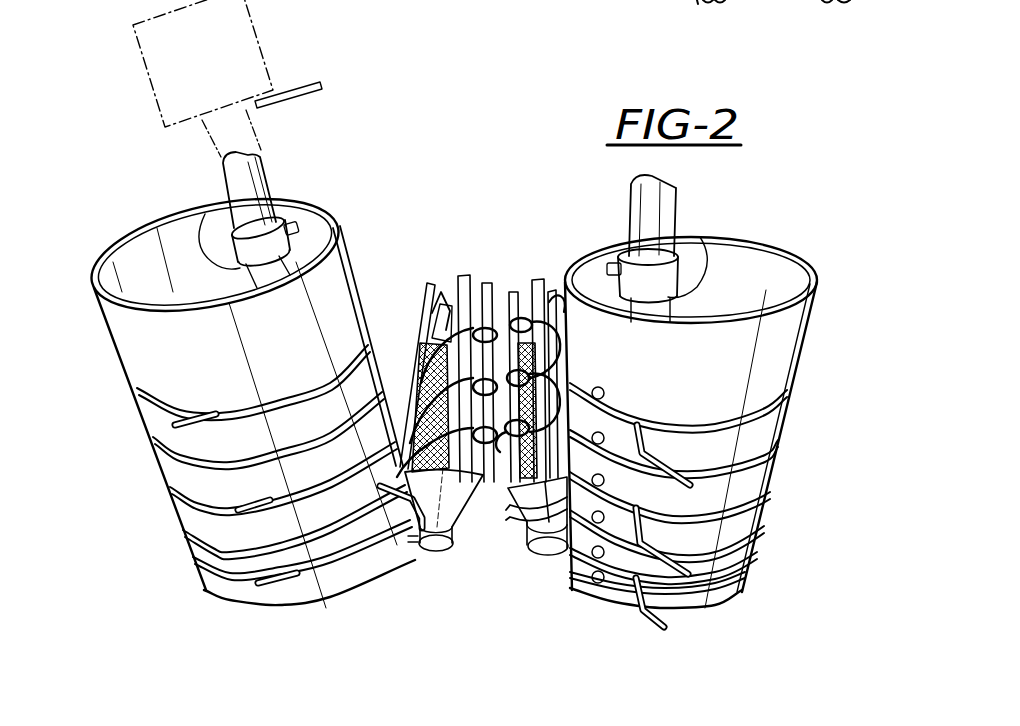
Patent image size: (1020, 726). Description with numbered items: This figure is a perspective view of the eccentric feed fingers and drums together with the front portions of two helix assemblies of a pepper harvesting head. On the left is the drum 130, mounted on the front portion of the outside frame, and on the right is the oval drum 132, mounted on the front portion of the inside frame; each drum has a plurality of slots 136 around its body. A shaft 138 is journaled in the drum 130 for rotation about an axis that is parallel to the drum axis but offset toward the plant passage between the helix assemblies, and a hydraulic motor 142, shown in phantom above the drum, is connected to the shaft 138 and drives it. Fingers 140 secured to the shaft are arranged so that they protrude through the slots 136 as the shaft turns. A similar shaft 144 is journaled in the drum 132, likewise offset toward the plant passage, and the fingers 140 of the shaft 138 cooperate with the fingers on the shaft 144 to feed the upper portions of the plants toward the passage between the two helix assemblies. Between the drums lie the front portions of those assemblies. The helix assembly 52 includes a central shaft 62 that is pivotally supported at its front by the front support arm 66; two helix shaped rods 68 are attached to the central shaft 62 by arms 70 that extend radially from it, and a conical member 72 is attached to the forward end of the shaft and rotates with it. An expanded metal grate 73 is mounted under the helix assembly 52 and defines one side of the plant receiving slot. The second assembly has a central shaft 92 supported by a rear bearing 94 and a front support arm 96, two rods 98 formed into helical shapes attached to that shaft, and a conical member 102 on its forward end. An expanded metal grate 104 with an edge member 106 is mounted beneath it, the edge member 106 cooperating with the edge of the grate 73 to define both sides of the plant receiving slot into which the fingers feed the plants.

The helix assembly 52 is at (416, 335).
The central shaft 62 is at (434, 312).
The front support arm 66 is at (412, 535).
The helix shaped rods 68 is at (486, 283).
The arms 70 is at (423, 298).
The conical member 72 is at (475, 532).
The expanded metal grate 73 is at (412, 382).
The central shaft 92 is at (540, 282).
The rear bearing 94 is at (463, 276).
The front support arm 96 is at (553, 550).
The rods 98 is at (550, 300).
The conical member 102 is at (527, 543).
The expanded metal grate 104 is at (496, 478).
The edge member 106 is at (512, 292).
The drum 130 is at (165, 387).
The drum 132 is at (800, 265).
The slots 136 is at (228, 566).
The shaft 138 is at (212, 216).
The fingers 140 is at (178, 428).
The hydraulic motor 142 is at (253, 62).
The shaft 144 is at (694, 237).